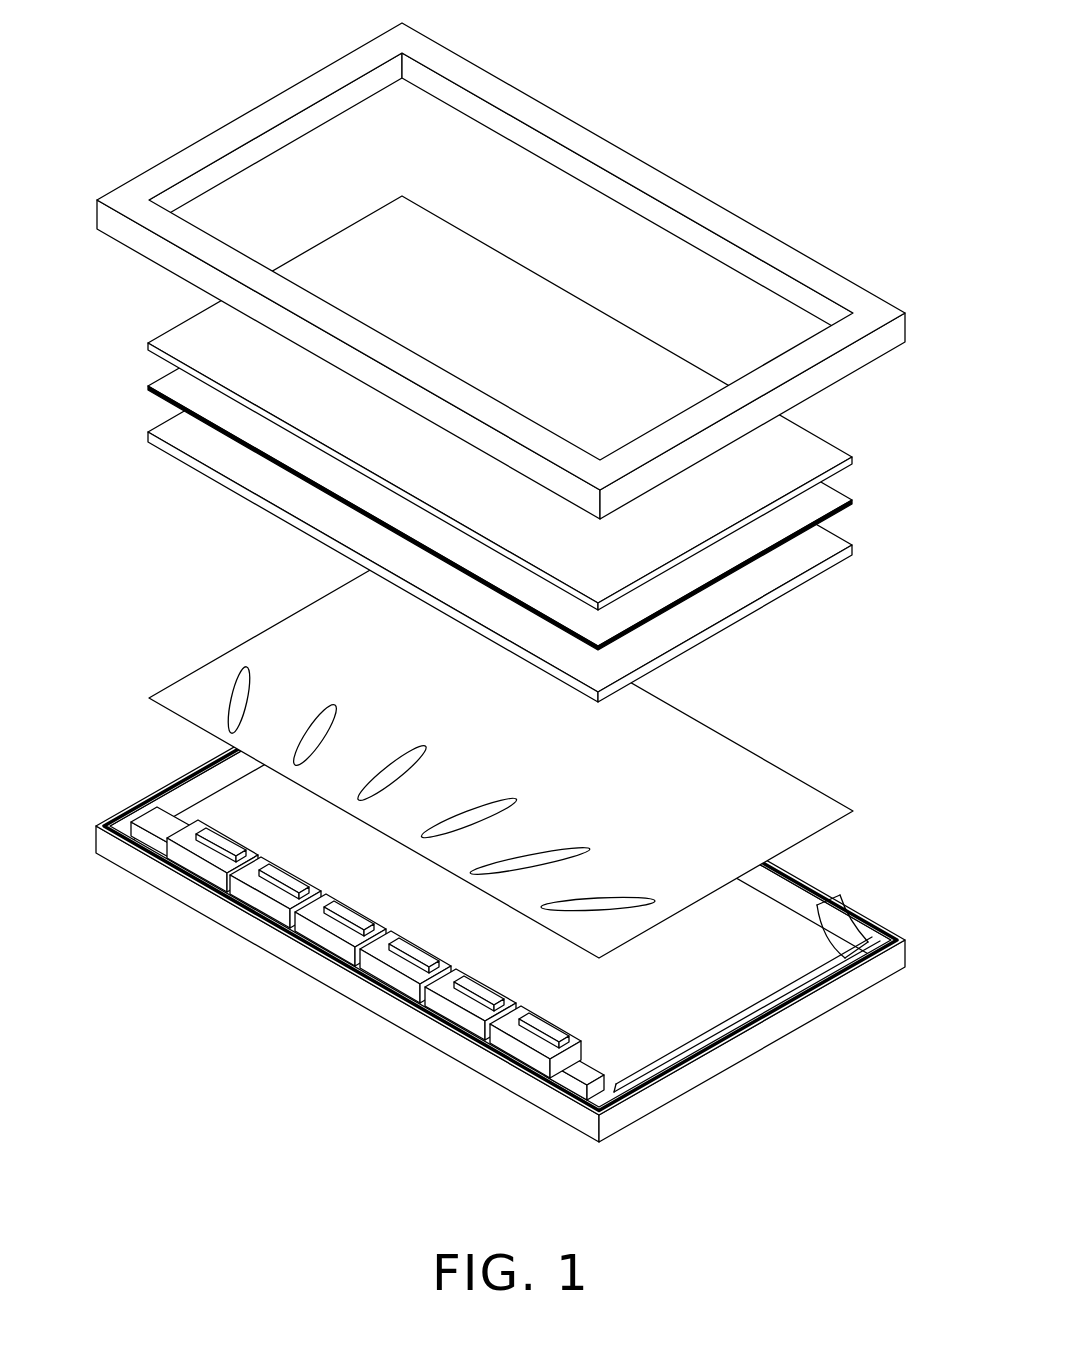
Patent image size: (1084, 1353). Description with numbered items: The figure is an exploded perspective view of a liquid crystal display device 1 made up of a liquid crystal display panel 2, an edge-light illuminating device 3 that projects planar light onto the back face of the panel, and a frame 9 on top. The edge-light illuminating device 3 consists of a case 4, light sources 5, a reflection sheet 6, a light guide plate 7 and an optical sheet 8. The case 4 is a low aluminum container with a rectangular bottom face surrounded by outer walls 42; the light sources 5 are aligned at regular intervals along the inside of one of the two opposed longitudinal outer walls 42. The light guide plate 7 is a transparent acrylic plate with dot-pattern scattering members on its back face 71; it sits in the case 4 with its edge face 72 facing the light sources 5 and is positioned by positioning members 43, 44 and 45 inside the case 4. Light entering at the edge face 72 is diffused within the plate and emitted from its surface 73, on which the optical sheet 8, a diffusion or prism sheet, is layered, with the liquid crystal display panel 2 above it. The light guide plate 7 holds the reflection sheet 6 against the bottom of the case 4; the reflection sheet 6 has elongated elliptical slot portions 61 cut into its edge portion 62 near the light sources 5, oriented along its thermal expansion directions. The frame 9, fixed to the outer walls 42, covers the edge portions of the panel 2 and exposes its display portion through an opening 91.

The liquid crystal display device 1 is at (772, 95).
The liquid crystal display panel 2 is at (827, 433).
The edge-light illuminating device 3 is at (903, 455).
The case 4 is at (509, 918).
The light sources 5 is at (258, 908).
The reflection sheet 6 is at (522, 754).
The light guide plate 7 is at (510, 493).
The optical sheet 8 is at (835, 487).
The frame 9 is at (501, 261).
The outer walls 42 is at (884, 888).
The positioning member 43 is at (125, 840).
The positioning member 44 is at (540, 1080).
The positioning member 45 is at (845, 970).
The slot portions 61 is at (360, 800).
The edge portion 62 is at (392, 817).
The back face 71 is at (752, 587).
The edge face 72 is at (300, 521).
The surface 73 is at (253, 465).
The opening 91 is at (332, 133).